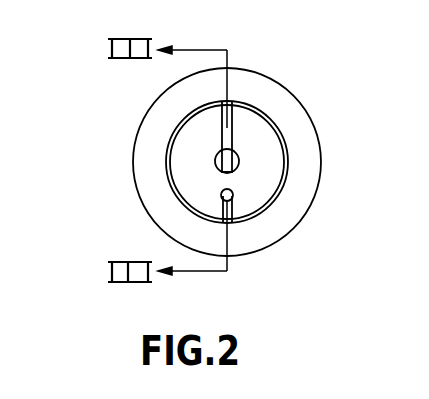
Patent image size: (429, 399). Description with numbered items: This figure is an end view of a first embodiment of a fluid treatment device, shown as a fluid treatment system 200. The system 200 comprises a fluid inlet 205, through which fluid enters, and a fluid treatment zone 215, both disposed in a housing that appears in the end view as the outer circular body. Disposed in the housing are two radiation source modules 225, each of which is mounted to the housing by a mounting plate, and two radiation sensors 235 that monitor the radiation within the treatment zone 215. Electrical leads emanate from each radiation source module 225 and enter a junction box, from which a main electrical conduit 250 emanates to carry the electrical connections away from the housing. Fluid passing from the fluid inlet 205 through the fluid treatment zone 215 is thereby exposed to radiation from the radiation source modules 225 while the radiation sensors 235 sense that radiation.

The fluid treatment system 200 is at (219, 199).
The fluid inlet 205 is at (193, 188).
The fluid treatment zone 215 is at (260, 162).
The radiation source module 225 is at (210, 143).
The radiation sensor 235 is at (232, 204).
The main electrical conduit 250 is at (152, 160).